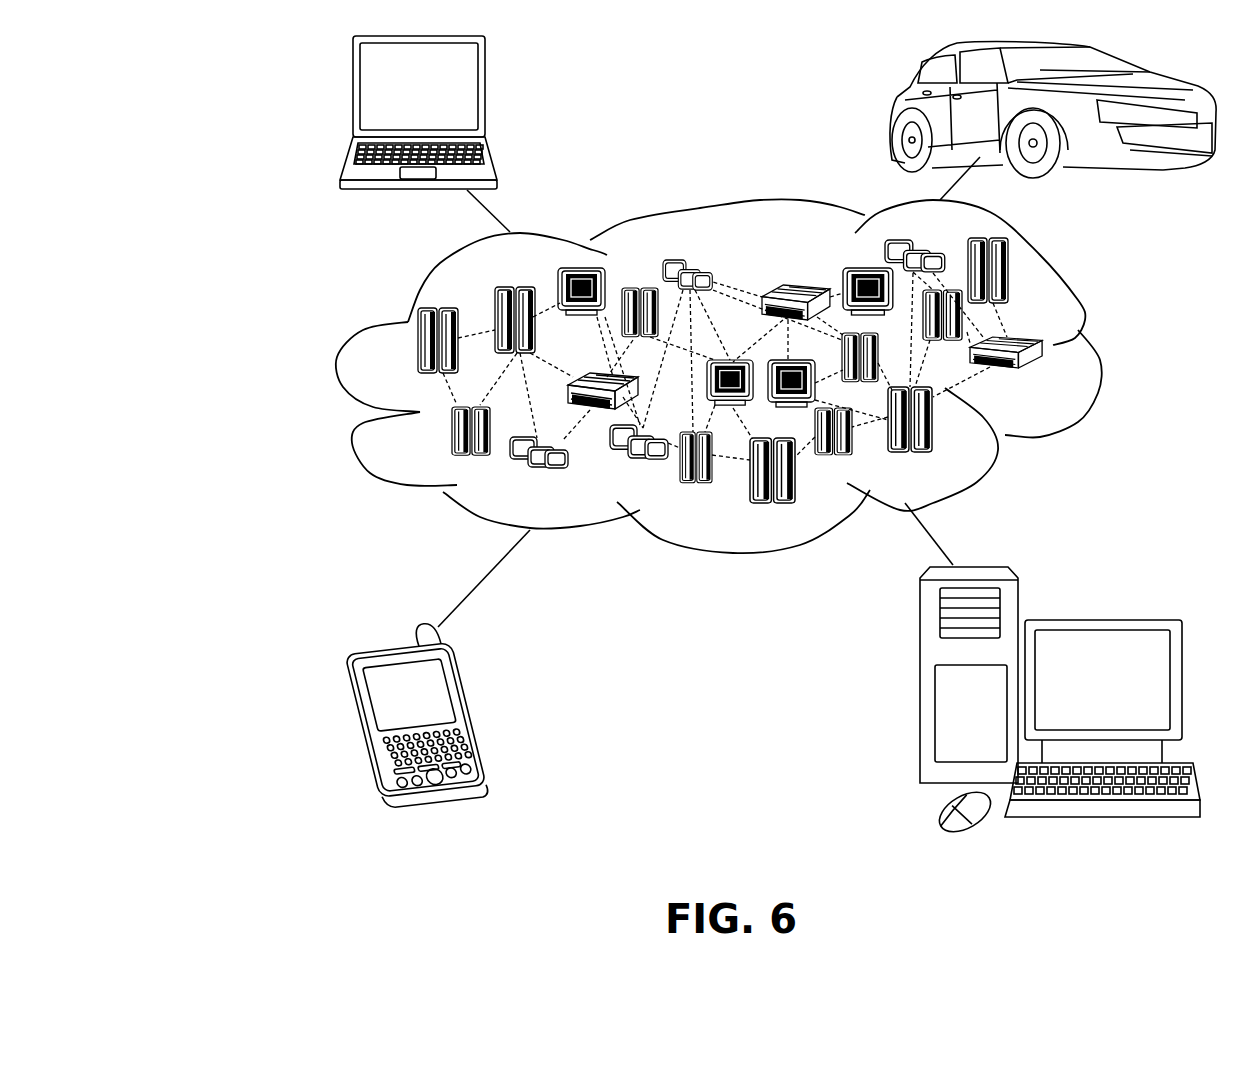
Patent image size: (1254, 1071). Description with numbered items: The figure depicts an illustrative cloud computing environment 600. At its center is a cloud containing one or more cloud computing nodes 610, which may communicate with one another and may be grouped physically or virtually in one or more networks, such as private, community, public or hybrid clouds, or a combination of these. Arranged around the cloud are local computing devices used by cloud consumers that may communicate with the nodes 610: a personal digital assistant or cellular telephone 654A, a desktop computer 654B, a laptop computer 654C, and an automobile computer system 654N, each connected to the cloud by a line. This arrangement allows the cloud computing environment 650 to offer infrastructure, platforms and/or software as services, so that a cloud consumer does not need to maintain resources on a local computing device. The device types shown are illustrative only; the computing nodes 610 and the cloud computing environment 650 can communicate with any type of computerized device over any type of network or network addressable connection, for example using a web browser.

The cloud computing environment 600 is at (196, 62).
The cloud computing nodes 610 is at (784, 370).
The cloud computing environment 650 is at (1101, 350).
The personal digital assistant or cellular telephone 654A is at (441, 712).
The desktop computer 654B is at (1097, 620).
The laptop computer 654C is at (486, 99).
The automobile computer system 654N is at (896, 114).